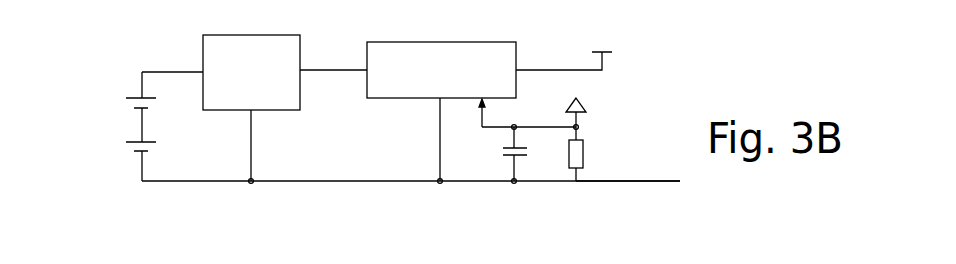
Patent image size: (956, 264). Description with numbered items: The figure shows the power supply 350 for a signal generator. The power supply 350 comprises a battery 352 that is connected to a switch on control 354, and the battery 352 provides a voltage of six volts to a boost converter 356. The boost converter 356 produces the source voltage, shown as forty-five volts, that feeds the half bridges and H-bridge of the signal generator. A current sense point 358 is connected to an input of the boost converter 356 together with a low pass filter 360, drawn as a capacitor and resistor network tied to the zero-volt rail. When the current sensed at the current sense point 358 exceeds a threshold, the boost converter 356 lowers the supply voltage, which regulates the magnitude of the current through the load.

The power supply 350 is at (323, 190).
The battery 352 is at (128, 125).
The switch on control 354 is at (200, 53).
The boost converter 356 is at (405, 98).
The current sense point 358 is at (625, 88).
The low pass filter 360 is at (610, 195).